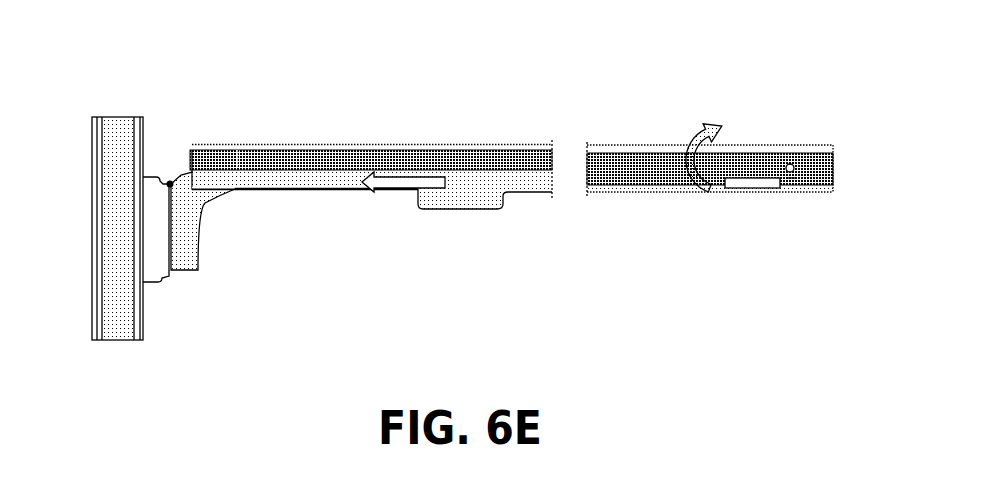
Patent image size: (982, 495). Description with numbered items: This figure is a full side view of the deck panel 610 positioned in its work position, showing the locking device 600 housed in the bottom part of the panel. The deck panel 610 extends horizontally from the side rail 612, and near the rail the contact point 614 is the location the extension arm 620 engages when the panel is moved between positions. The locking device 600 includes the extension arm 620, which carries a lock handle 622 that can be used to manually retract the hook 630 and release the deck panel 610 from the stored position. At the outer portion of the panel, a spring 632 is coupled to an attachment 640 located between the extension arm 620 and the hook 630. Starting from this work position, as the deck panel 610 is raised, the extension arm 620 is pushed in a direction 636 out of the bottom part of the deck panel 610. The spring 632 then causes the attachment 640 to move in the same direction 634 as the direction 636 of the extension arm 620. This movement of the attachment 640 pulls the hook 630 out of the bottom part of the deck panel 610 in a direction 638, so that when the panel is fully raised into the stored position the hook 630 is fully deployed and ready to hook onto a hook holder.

The locking device 600 is at (536, 191).
The deck panel 610 is at (638, 141).
The side rail 612 is at (160, 177).
The contact point 614 is at (170, 184).
The extension arm 620 is at (330, 188).
The lock handle 622 is at (455, 200).
The hook 630 is at (728, 178).
The spring 632 is at (795, 171).
The direction of attachment movement 634 is at (754, 178).
The direction of extension arm movement 636 is at (391, 181).
The direction of hook movement 638 is at (703, 191).
The attachment 640 is at (792, 181).